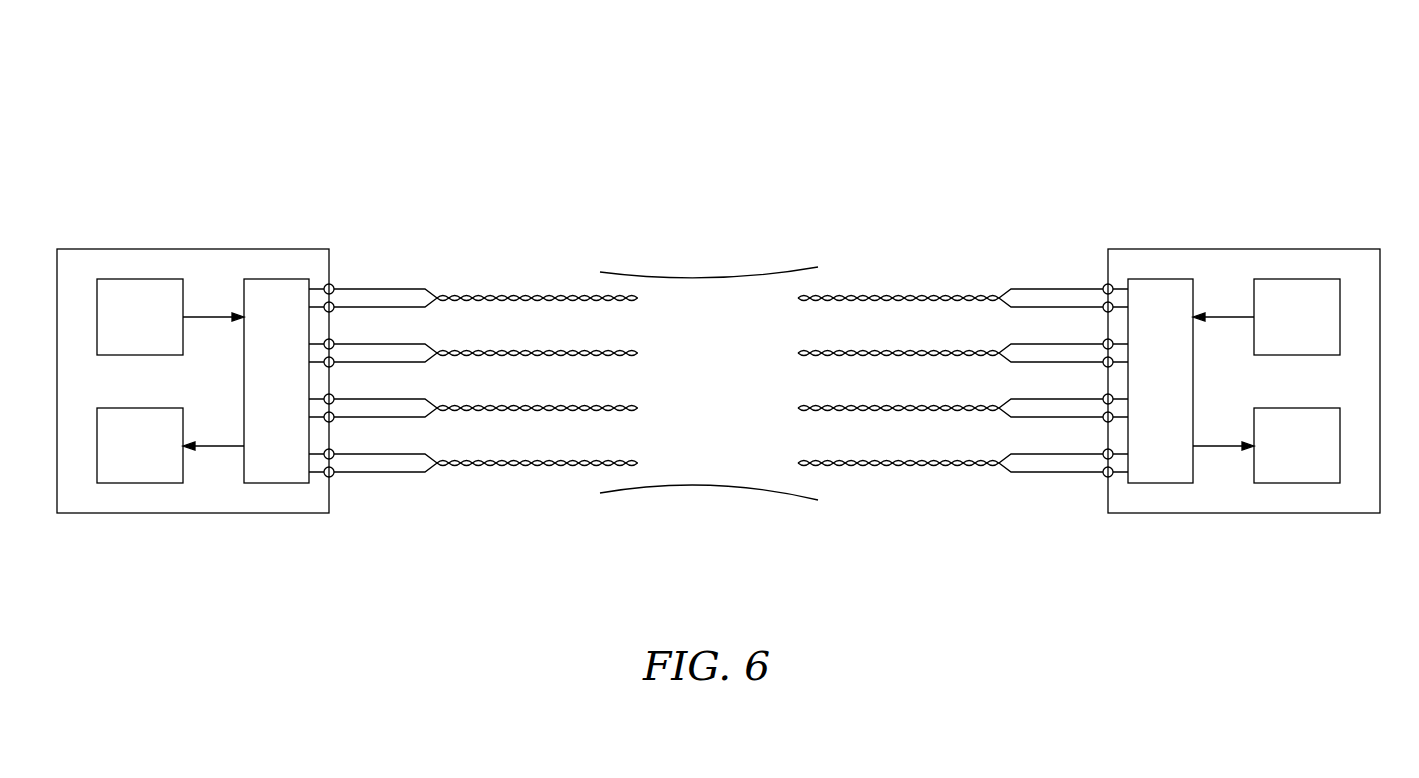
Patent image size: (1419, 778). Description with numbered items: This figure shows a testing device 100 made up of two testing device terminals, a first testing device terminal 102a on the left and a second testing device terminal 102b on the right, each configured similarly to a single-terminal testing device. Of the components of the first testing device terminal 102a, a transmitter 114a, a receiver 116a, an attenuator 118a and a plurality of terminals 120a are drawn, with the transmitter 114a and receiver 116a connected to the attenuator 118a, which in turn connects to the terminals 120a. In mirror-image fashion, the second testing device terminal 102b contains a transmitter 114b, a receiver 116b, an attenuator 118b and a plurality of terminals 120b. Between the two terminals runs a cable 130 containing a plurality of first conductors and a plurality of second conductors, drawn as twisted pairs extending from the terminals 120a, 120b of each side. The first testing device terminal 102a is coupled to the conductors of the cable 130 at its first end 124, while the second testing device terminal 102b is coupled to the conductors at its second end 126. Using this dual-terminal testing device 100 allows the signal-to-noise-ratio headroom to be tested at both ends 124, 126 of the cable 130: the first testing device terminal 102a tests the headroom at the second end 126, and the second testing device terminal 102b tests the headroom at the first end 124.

The testing device 100 is at (850, 85).
The first testing device terminal 102a is at (193, 249).
The second testing device terminal 102b is at (1243, 249).
The transmitter 114a is at (150, 279).
The transmitter 114b is at (1285, 279).
The receiver 116a is at (150, 408).
The receiver 116b is at (1285, 408).
The attenuator 118a is at (292, 279).
The attenuator 118b is at (1150, 279).
The plurality of terminals 120a is at (336, 360).
The plurality of terminals 120b is at (1101, 360).
The first end 124 is at (348, 190).
The second end 126 is at (1089, 190).
The cable 130 is at (707, 278).